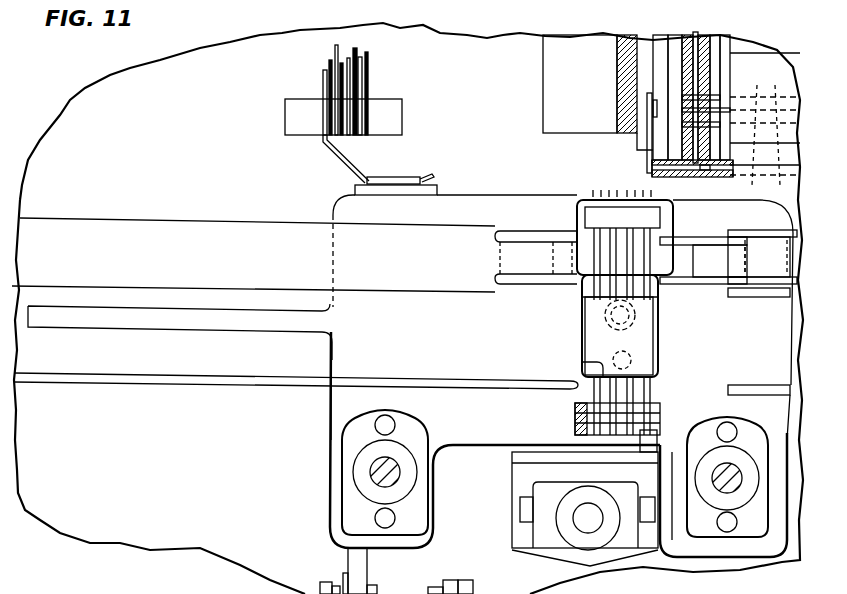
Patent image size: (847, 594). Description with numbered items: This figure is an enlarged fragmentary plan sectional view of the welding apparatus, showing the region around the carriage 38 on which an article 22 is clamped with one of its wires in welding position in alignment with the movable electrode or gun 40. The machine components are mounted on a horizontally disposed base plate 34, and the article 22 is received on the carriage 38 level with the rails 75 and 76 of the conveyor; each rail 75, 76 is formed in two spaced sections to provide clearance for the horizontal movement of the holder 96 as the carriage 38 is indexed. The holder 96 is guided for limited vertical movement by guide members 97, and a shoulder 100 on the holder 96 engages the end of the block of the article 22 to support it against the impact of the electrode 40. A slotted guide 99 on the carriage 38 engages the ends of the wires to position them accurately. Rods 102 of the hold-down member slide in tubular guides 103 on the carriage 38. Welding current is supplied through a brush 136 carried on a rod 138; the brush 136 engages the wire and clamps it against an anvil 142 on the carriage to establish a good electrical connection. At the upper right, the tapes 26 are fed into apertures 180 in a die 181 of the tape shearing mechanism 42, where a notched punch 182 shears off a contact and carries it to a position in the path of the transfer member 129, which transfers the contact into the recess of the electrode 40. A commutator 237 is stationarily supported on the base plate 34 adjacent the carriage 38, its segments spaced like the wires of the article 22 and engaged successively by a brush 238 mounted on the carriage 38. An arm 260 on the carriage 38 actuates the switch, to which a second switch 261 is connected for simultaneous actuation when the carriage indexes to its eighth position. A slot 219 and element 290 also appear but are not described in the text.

The base plate 34 is at (148, 532).
The rail 75 is at (255, 248).
The slot 219 is at (205, 323).
The carriage 38 is at (324, 342).
The rail 76 is at (522, 387).
The commutator 237 is at (312, 92).
The brush 238 is at (328, 150).
The punch 182 is at (714, 36).
The tape shearing mechanism 42 is at (692, 31).
The die 181 is at (722, 67).
The apertures 180 is at (715, 108).
The tapes 26 is at (782, 168).
The electrode 40 is at (650, 160).
The transfer member 129 is at (710, 177).
The slotted guide 99 is at (578, 197).
The article 22 is at (580, 315).
The guide members 97 is at (633, 318).
The shoulder 100 is at (598, 364).
The holder 96 is at (660, 345).
The brush 136 is at (662, 410).
The anvil 142 is at (577, 414).
The tubular guides 103 is at (368, 460).
The rods 102 is at (402, 462).
The rod 138 is at (585, 522).
The arm 260 is at (378, 590).
The terminal block 290 is at (452, 570).
The switch 261 is at (470, 580).